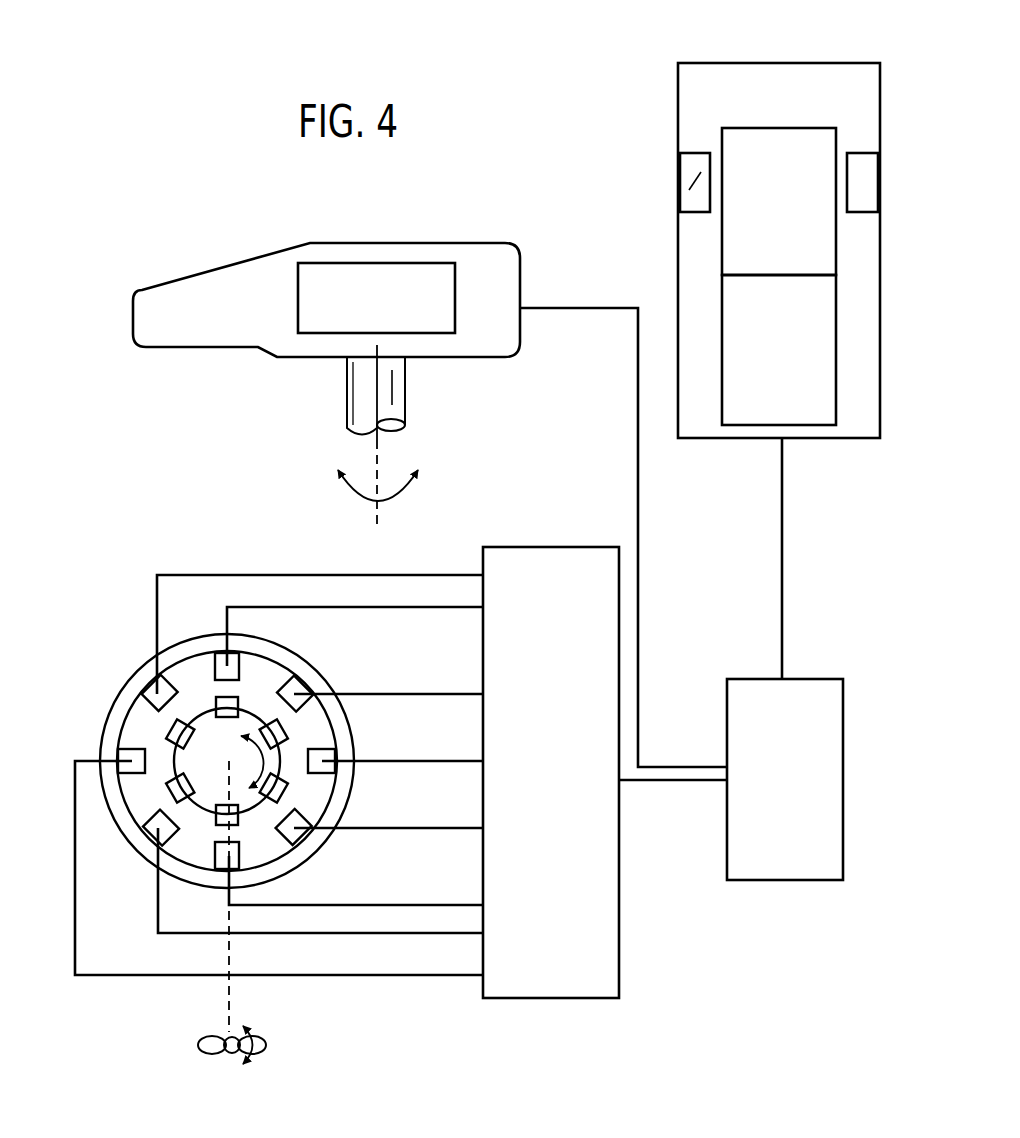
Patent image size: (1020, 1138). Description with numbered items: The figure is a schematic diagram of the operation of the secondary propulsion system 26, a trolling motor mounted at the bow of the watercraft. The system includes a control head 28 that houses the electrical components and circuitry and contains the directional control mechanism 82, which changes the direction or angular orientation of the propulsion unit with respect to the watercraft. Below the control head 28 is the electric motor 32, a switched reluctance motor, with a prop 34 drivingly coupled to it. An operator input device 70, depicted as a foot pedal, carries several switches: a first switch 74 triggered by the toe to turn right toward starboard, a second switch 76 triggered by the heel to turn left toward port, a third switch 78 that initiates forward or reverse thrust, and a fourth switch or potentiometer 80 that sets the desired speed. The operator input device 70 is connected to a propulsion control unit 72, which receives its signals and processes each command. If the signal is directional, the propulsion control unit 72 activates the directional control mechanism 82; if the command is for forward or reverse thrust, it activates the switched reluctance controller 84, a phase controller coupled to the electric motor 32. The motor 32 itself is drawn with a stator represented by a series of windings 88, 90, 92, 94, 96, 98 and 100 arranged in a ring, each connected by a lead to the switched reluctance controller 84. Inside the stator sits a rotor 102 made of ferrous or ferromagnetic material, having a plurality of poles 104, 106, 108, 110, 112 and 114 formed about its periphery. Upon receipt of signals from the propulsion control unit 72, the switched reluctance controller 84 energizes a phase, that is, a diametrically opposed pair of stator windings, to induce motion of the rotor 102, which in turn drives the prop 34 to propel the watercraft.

The secondary propulsion system 26 is at (399, 400).
The control head 28 is at (205, 374).
The electric motor 32 is at (76, 764).
The prop 34 is at (228, 1038).
The operator input device 70 is at (777, 62).
The propulsion control unit 72 is at (844, 757).
The first switch 74 is at (722, 130).
The second switch 76 is at (836, 328).
The third switch 78 is at (679, 185).
The fourth switch or potentiometer 80 is at (879, 173).
The directional control mechanism 82 is at (328, 358).
The switched reluctance controller 84 is at (619, 885).
The stator winding 88 is at (241, 667).
The stator winding 90 is at (246, 856).
The stator winding 92 is at (303, 700).
The stator winding 94 is at (152, 841).
The stator winding 96 is at (325, 768).
The stator winding 98 is at (101, 725).
The stator winding 100 is at (297, 841).
The rotor 102 is at (230, 757).
The rotor pole 104 is at (208, 702).
The rotor pole 106 is at (212, 838).
The rotor pole 108 is at (300, 722).
The rotor pole 110 is at (166, 798).
The rotor pole 112 is at (301, 794).
The rotor pole 114 is at (130, 717).